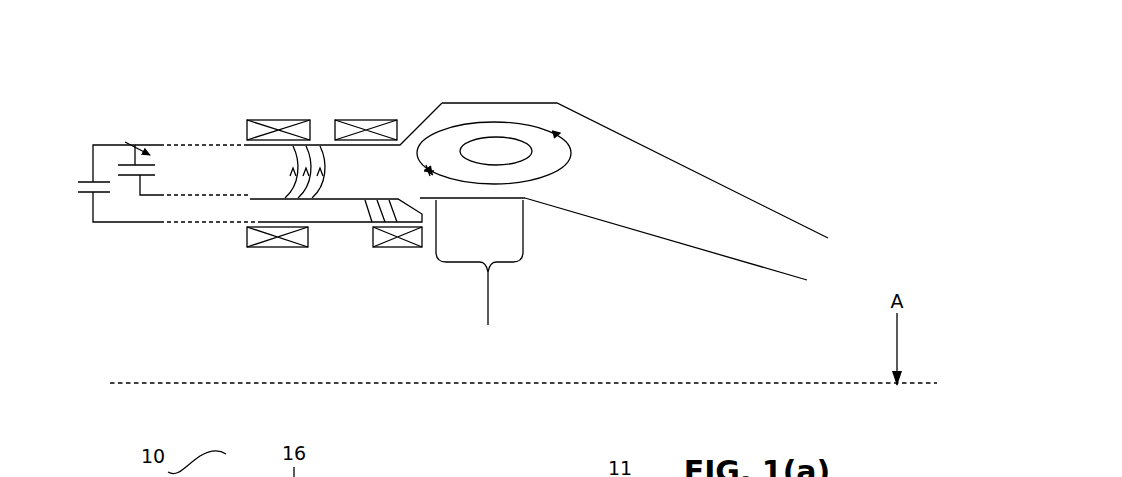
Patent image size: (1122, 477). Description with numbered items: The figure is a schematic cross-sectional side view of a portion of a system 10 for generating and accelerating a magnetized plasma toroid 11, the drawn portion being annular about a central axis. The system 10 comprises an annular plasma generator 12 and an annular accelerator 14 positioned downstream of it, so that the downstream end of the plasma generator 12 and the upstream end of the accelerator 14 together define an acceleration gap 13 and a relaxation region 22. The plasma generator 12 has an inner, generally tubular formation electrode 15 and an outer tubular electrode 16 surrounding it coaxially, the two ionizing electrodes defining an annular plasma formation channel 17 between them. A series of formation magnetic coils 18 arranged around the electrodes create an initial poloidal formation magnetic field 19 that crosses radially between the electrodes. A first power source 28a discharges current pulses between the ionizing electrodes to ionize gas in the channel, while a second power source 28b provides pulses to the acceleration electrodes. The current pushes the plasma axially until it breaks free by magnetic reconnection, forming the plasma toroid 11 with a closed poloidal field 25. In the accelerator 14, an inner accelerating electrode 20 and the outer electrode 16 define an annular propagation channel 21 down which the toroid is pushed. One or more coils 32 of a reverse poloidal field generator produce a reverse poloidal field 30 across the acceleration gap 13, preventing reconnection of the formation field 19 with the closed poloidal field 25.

The system 10 is at (258, 27).
The plasma toroid 11 is at (494, 123).
The plasma generator 12 is at (252, 208).
The acceleration gap 13 is at (415, 201).
The accelerator 14 is at (612, 117).
The inner formation electrode 15 is at (337, 200).
The outer electrode 16 is at (322, 143).
The plasma formation channel 17 is at (355, 181).
The formation magnetic coils 18 is at (257, 246).
The poloidal formation magnetic field 19 is at (302, 201).
The inner accelerating electrode 20 is at (568, 213).
The propagation channel 21 is at (687, 203).
The relaxation region 22 is at (480, 278).
The closed poloidal field 25 is at (436, 173).
The first power source 28a is at (130, 180).
The second power source 28b is at (73, 190).
The reverse poloidal field 30 is at (372, 221).
The coils 32 is at (395, 244).